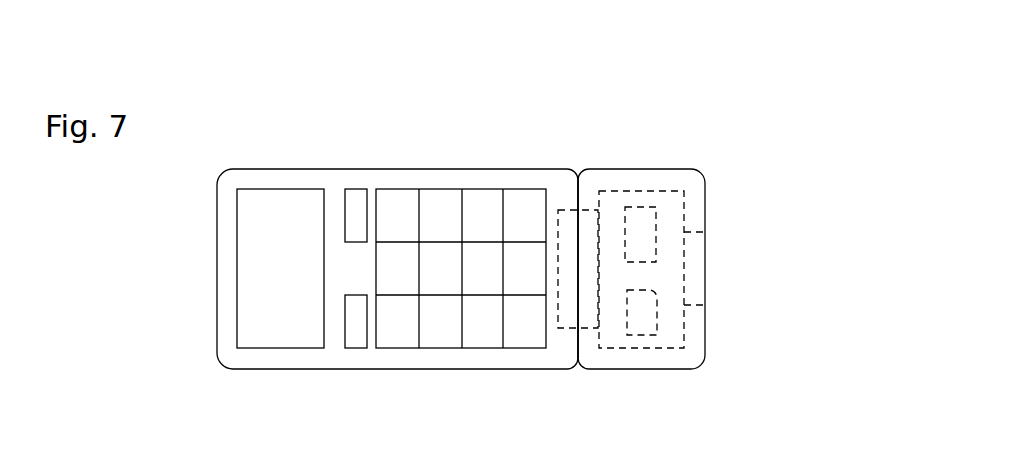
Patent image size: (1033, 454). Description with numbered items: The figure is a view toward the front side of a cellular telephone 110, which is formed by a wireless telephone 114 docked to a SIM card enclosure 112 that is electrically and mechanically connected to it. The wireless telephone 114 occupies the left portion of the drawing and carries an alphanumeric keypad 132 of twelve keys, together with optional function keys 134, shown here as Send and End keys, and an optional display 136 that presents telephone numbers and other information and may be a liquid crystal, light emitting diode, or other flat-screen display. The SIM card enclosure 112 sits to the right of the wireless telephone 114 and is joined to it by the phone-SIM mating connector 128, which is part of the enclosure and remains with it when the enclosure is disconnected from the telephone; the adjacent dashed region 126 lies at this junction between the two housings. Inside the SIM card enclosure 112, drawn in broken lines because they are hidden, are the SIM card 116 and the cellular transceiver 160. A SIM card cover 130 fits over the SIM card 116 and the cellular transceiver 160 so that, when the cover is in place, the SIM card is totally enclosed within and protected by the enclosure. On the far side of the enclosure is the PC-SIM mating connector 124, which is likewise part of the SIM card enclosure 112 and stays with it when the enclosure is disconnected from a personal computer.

The cellular telephone 110 is at (751, 47).
The SIM card enclosure 112 is at (670, 369).
The wireless telephone 114 is at (237, 168).
The SIM card 116 is at (637, 335).
The PC-SIM mating connector 124 is at (699, 232).
The hinge region 126 is at (564, 209).
The phone-SIM mating connector 128 is at (586, 209).
The SIM card cover 130 is at (683, 369).
The alphanumeric keypad 132 is at (413, 188).
The function keys 134 is at (355, 188).
The display 136 is at (282, 348).
The cellular transceiver 160 is at (643, 207).